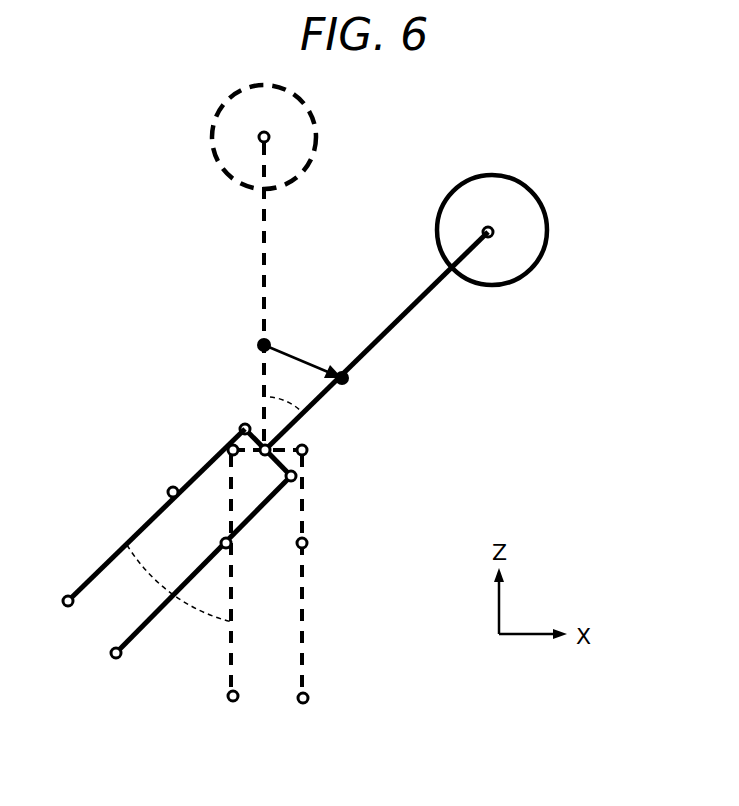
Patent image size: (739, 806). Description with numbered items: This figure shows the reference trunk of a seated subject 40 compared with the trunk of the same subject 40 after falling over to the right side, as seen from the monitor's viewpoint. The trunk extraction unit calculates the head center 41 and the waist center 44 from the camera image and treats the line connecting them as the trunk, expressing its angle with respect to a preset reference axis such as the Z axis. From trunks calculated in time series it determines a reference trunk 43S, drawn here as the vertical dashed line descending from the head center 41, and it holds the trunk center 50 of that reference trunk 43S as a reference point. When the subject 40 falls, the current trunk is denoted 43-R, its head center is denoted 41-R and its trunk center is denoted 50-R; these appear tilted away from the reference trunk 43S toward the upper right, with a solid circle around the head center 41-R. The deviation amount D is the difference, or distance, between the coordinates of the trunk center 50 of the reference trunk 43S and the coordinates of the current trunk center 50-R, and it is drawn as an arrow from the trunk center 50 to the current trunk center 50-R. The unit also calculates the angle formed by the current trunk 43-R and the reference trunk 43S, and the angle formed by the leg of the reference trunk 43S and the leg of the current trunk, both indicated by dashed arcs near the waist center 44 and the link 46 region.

The subject 40 is at (514, 181).
The head center 41 is at (270, 136).
The head center of the falling subject 41-R is at (495, 231).
The reference trunk 43S is at (264, 284).
The current trunk of the falling subject 43-R is at (392, 333).
The waist center 44 is at (262, 456).
The link 46 is at (150, 510).
The trunk center 50 is at (257, 340).
The current trunk center 50-R is at (348, 384).
The deviation amount D is at (291, 346).